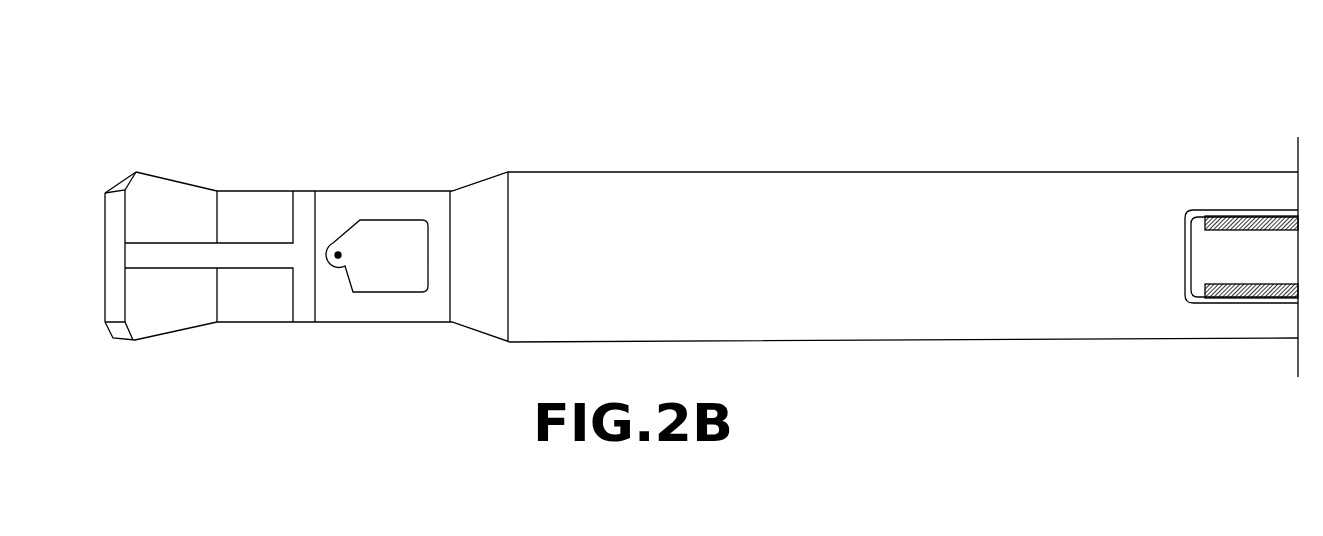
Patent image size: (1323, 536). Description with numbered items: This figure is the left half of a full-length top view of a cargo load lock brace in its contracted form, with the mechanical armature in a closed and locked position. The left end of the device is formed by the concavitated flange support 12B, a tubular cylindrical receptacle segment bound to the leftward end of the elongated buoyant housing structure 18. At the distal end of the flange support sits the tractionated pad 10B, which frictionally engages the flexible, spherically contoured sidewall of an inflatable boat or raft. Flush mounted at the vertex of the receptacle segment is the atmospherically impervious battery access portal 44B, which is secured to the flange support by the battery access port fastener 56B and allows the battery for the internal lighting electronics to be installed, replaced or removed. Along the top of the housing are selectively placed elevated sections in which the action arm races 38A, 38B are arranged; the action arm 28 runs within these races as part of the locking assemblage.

The tractionated pad 10B is at (118, 178).
The concavitated flange support 12B is at (250, 212).
The buoyant housing structure 18 is at (593, 195).
The action arm 28 is at (1283, 248).
The action arm race 38A is at (1222, 300).
The action arm race 38B is at (1220, 210).
The battery access portal 44B is at (398, 238).
The battery access port fastener 56B is at (341, 252).